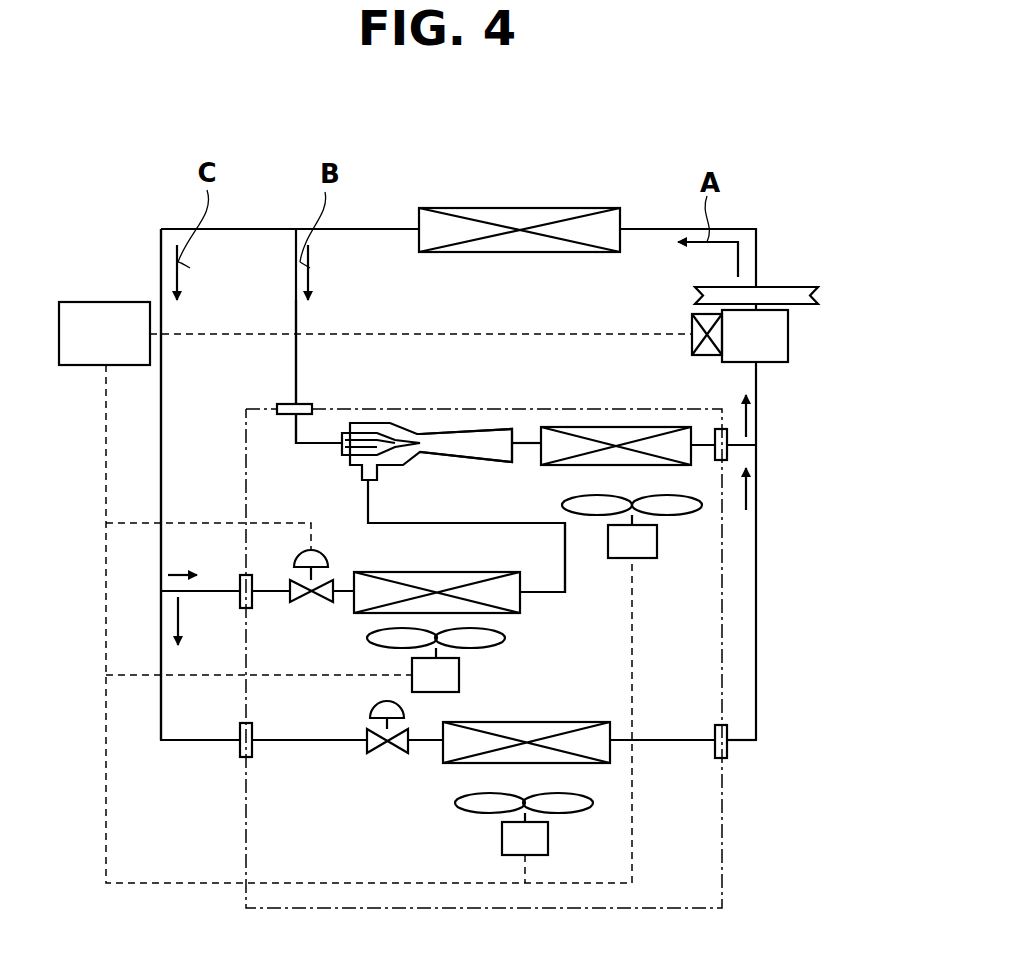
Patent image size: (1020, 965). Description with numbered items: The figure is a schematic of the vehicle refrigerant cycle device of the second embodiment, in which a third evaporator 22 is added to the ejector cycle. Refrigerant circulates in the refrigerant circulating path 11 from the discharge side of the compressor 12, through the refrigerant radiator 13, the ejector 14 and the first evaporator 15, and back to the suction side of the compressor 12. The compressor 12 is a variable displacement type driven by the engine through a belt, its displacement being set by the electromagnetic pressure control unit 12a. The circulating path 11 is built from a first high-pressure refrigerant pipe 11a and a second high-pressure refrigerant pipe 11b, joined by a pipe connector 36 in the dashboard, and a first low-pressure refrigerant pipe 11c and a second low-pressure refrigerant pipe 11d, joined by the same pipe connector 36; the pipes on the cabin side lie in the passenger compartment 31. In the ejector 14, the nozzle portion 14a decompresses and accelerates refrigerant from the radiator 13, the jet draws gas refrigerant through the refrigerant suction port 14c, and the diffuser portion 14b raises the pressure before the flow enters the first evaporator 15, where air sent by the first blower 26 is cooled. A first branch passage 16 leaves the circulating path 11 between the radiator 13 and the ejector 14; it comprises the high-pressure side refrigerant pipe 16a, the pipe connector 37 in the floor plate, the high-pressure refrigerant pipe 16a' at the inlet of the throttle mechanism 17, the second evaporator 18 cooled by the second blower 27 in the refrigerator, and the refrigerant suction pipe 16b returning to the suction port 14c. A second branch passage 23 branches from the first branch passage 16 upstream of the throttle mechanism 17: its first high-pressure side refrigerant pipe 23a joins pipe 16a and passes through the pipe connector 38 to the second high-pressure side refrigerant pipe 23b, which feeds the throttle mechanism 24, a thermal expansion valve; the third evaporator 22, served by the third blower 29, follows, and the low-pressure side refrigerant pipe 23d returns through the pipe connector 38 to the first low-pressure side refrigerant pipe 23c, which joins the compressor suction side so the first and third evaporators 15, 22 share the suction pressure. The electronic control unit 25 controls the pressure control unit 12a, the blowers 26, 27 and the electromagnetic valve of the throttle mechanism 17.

The refrigerant circulating path 11 is at (285, 357).
The first high-pressure refrigerant pipe 11a is at (296, 388).
The second high-pressure refrigerant pipe 11b is at (293, 435).
The first low-pressure refrigerant pipe 11c is at (756, 445).
The second low-pressure refrigerant pipe 11d is at (700, 447).
The compressor 12 is at (768, 362).
The electromagnetic pressure control unit 12a is at (692, 340).
The refrigerant radiator 13 is at (522, 208).
The ejector 14 is at (436, 428).
The nozzle portion 14a is at (387, 435).
The diffuser portion 14b is at (500, 430).
The refrigerant suction port 14c is at (378, 470).
The first evaporator 15 is at (648, 427).
The first branch passage 16 is at (152, 443).
The high-pressure side refrigerant pipe 16a is at (195, 570).
The high-pressure refrigerant pipe 16a' is at (164, 554).
The refrigerant suction pipe 16b is at (565, 565).
The throttle mechanism 17 is at (328, 552).
The second evaporator 18 is at (380, 613).
The third evaporator 22 is at (573, 722).
The second branch passage 23 is at (162, 722).
The first high-pressure side refrigerant pipe 23a is at (188, 740).
The second high-pressure side refrigerant pipe 23b is at (300, 740).
The first low-pressure side refrigerant pipe 23c is at (727, 745).
The low-pressure side refrigerant pipe 23d is at (675, 740).
The throttle mechanism 24 is at (377, 748).
The electronic control unit 25 is at (106, 302).
The first blower 26 is at (657, 540).
The second blower 27 is at (459, 675).
The third blower 29 is at (548, 838).
The passenger compartment 31 is at (722, 827).
The pipe connector 36 is at (287, 414).
The pipe connector 37 is at (241, 600).
The pipe connector 38 is at (240, 757).